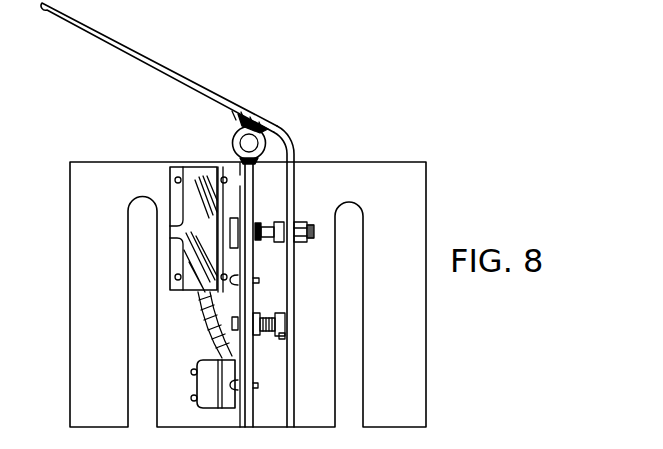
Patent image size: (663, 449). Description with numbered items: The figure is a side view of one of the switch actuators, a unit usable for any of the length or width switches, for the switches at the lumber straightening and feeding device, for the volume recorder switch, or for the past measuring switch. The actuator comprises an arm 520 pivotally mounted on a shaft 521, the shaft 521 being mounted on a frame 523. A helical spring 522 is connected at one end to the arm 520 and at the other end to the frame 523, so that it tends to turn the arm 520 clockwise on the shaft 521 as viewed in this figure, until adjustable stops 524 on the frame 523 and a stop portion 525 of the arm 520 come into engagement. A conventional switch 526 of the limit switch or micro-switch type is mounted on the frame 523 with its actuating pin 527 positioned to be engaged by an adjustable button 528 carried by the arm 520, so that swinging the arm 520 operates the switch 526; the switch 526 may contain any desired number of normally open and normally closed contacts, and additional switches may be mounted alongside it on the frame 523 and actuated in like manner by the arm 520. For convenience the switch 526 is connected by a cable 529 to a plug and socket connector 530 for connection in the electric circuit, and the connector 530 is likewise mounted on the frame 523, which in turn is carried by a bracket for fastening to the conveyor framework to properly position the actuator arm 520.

The arm 520 is at (105, 35).
The shaft 521 is at (244, 139).
The helical spring 522 is at (222, 104).
The frame 523 is at (250, 197).
The adjustable stops 524 is at (282, 339).
The stop portion 525 is at (287, 320).
The switch 526 is at (177, 190).
The actuating pin 527 is at (264, 237).
The adjustable button 528 is at (279, 222).
The cable 529 is at (212, 322).
The plug and socket connector 530 is at (208, 368).